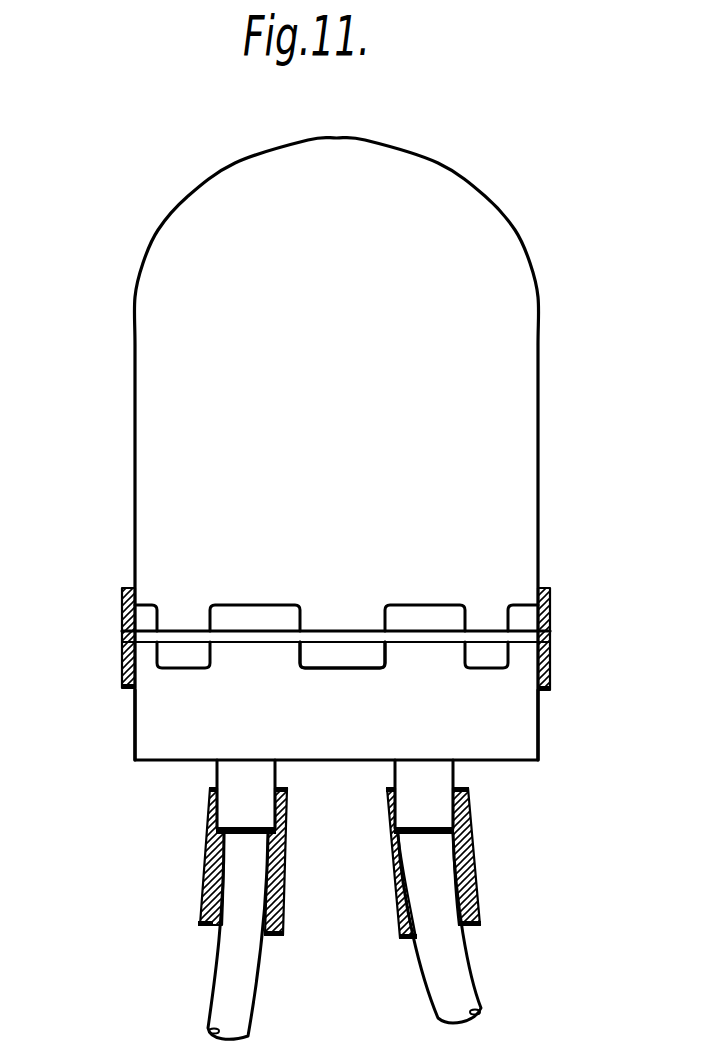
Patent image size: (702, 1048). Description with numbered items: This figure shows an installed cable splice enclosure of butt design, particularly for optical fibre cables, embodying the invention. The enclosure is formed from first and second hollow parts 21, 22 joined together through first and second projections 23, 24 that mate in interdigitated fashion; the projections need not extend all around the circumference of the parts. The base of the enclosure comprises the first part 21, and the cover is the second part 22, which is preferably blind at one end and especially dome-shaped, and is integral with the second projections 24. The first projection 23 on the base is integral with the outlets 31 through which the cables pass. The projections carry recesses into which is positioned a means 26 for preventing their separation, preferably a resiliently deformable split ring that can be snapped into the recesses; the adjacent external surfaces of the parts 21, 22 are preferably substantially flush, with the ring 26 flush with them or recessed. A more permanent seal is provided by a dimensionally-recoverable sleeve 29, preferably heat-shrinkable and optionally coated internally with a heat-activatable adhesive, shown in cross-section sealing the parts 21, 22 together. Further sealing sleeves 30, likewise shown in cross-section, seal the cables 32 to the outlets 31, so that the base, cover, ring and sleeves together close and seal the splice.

The first hollow part 21 is at (143, 727).
The second hollow part 22 is at (140, 412).
The first projection 23 is at (425, 615).
The second projection 24 is at (335, 618).
The means for preventing separation (ring) 26 is at (147, 630).
The dimensionally-recoverable sleeve 29 is at (547, 677).
The sealing sleeve 30 is at (470, 878).
The outlet 31 is at (243, 798).
The cable 32 is at (235, 982).